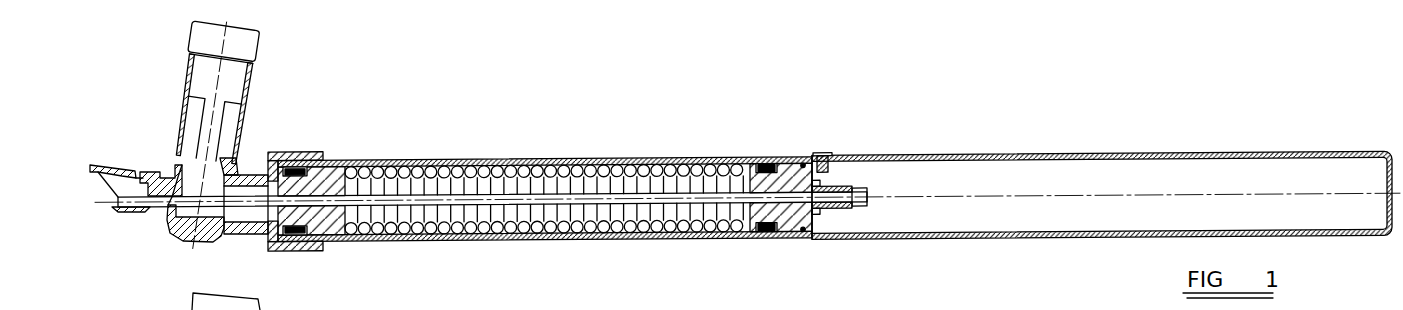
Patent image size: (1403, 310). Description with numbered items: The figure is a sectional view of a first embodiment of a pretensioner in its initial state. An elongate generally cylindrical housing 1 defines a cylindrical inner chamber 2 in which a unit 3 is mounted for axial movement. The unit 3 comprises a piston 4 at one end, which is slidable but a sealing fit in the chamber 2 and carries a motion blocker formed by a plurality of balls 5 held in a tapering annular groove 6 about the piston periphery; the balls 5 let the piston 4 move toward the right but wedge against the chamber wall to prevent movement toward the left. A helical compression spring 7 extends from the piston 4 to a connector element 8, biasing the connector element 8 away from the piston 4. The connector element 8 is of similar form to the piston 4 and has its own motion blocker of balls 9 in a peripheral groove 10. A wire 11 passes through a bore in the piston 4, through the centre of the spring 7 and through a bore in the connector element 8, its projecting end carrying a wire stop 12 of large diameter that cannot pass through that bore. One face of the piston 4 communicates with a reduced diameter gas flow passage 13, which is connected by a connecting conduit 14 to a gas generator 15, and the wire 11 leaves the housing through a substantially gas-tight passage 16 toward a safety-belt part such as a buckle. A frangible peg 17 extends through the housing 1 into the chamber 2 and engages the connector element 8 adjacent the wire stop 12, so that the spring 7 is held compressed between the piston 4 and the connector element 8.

The housing 1 is at (1048, 152).
The inner chamber 2 is at (933, 180).
The unit 3 is at (489, 152).
The piston 4 is at (327, 182).
The balls 5 is at (293, 165).
The annular groove 6 is at (298, 243).
The helical compression spring 7 is at (563, 167).
The connector element 8 is at (783, 162).
The balls 9 is at (770, 236).
The peripheral groove 10 is at (800, 228).
The wire 11 is at (682, 197).
The wire stop 12 is at (842, 212).
The gas flow passage 13 is at (243, 214).
The connecting conduit 14 is at (252, 100).
The gas generator 15 is at (258, 45).
The gas-tight passage 16 is at (138, 213).
The frangible peg 17 is at (827, 152).